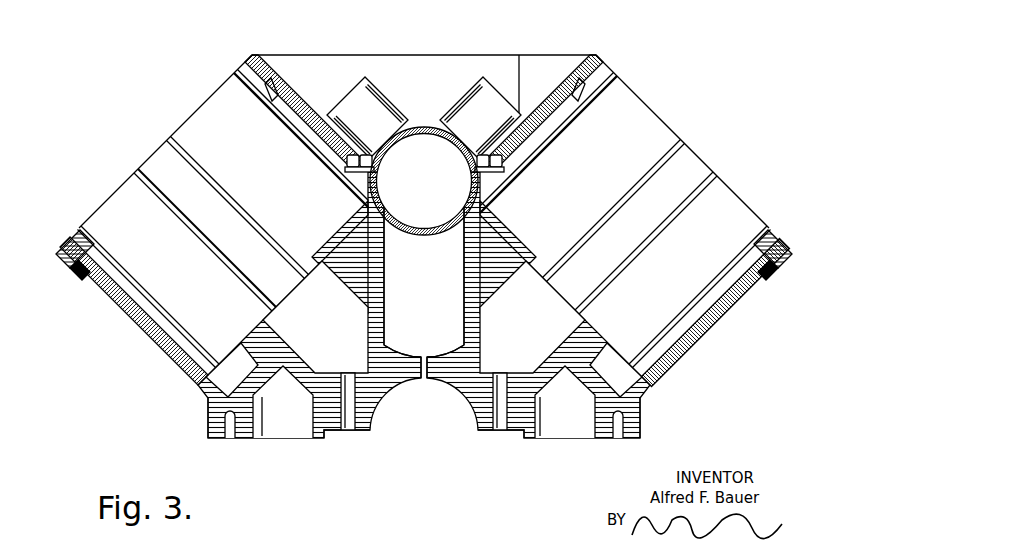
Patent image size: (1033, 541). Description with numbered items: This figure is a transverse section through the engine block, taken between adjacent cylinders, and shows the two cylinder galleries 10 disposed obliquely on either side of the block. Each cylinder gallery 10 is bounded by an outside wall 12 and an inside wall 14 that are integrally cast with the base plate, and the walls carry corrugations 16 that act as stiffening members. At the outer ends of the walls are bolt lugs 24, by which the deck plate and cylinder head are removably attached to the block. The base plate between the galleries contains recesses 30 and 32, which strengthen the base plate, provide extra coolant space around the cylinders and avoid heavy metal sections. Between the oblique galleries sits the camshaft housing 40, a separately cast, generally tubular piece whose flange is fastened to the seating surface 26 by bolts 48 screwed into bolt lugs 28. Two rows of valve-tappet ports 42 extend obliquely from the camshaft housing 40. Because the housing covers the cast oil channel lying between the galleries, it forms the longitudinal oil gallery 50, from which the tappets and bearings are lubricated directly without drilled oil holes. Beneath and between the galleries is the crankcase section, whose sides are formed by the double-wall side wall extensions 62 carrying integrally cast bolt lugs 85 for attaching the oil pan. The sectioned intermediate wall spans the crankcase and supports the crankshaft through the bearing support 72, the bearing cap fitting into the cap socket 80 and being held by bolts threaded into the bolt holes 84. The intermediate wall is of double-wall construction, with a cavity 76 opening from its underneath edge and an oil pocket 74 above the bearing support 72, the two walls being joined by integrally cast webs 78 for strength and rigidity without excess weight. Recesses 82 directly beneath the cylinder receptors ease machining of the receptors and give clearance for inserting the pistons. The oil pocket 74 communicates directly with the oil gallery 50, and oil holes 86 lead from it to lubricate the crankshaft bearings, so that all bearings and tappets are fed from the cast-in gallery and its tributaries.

The cylinder gallery 10 is at (124, 310).
The outside wall 12 is at (173, 349).
The inside wall 14 is at (286, 112).
The corrugations 16 is at (613, 104).
The bolt lugs 24 is at (777, 272).
The seating surface 26 is at (350, 158).
The bolt lugs 28 is at (468, 183).
The recess 30 is at (236, 368).
The recess 32 is at (353, 247).
The camshaft housing 40 is at (424, 127).
The valve-tappet ports 42 is at (343, 112).
The bolts 48 is at (504, 158).
The oil gallery 50 is at (424, 258).
The side wall extension 62 is at (220, 440).
The bearing support 72 is at (472, 400).
The oil pocket 74 is at (424, 325).
The cavity 76 is at (289, 427).
The webs 78 is at (306, 366).
The cap socket 80 is at (334, 433).
The recesses 82 is at (293, 318).
The bolt holes 84 is at (354, 433).
The bolt lugs 85 is at (238, 436).
The oil holes 86 is at (424, 376).